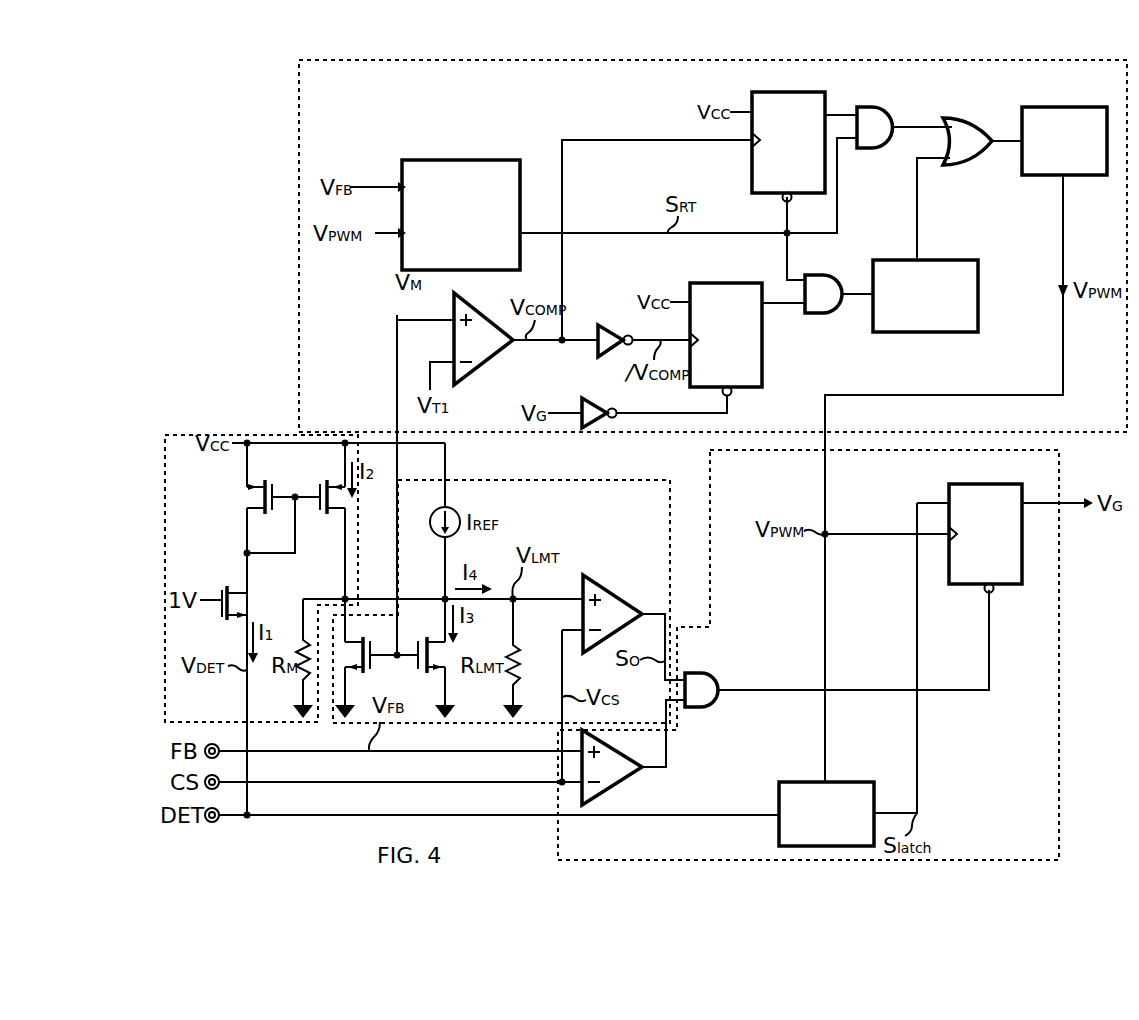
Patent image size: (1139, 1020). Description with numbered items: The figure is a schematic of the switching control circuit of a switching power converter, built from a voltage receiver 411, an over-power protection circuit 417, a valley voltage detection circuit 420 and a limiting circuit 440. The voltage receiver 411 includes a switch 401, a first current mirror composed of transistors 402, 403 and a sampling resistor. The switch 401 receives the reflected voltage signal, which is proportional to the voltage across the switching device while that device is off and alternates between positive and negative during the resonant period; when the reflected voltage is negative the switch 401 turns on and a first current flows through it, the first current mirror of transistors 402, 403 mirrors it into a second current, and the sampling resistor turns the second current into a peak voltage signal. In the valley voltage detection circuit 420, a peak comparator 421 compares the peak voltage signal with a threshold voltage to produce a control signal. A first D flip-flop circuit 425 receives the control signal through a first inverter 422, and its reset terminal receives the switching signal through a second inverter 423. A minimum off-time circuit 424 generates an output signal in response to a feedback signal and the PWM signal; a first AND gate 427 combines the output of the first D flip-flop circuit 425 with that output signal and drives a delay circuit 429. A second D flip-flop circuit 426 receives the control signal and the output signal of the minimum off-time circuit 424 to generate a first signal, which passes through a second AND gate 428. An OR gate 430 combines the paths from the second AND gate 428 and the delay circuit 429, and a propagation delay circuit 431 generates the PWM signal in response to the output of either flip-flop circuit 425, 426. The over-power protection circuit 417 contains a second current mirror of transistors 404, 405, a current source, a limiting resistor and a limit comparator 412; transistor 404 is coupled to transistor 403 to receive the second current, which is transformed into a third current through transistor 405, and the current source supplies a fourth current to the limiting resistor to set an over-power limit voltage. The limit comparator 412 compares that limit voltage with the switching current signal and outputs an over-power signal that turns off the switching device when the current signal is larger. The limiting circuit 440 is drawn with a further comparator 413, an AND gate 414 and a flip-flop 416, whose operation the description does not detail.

The switch 401 is at (255, 603).
The transistor 402 is at (283, 505).
The transistor 403 is at (325, 486).
The transistor 404 is at (371, 662).
The transistor 405 is at (422, 662).
The voltage receiver 411 is at (236, 435).
The limit comparator 412 is at (614, 611).
The comparator 413 is at (613, 767).
The AND gate 414 is at (708, 675).
The flip-flop 416 is at (985, 525).
The over-power protection circuit 417 is at (660, 480).
The valley voltage detection circuit 420 is at (1125, 434).
The peak comparator 421 is at (485, 341).
The first inverter 422 is at (607, 326).
The second inverter 423 is at (593, 399).
The minimum off-time circuit 424 is at (461, 202).
The first D flip-flop circuit 425 is at (726, 325).
The second D flip-flop circuit 426 is at (788, 133).
The first AND gate 427 is at (824, 281).
The second AND gate 428 is at (873, 115).
The delay circuit 429 is at (925, 282).
The OR gate 430 is at (883, 469).
The propagation delay circuit 431 is at (1064, 129).
The limiting circuit 440 is at (1059, 642).